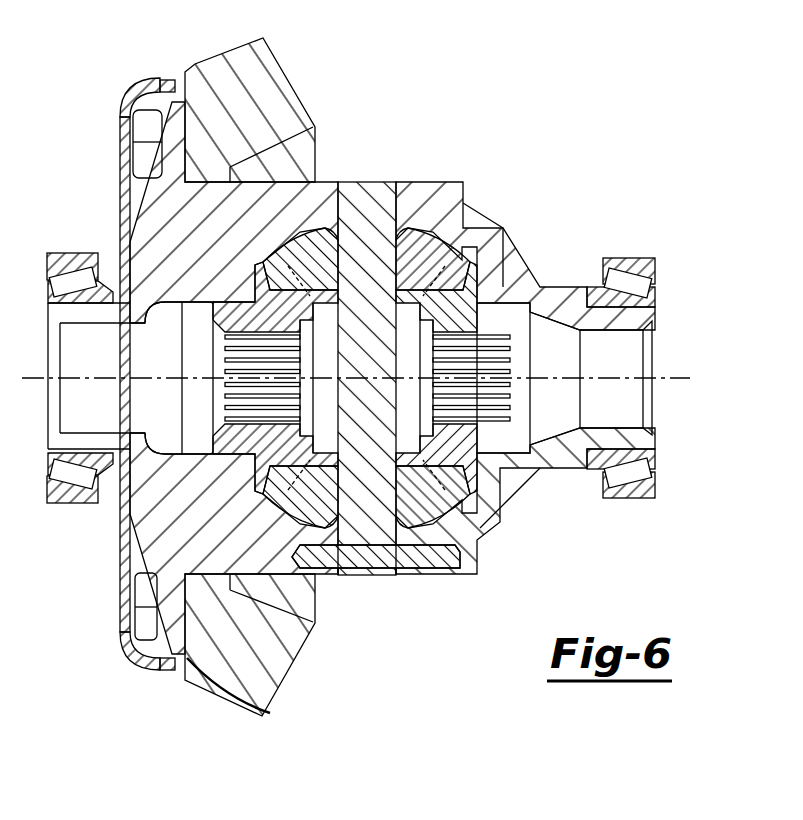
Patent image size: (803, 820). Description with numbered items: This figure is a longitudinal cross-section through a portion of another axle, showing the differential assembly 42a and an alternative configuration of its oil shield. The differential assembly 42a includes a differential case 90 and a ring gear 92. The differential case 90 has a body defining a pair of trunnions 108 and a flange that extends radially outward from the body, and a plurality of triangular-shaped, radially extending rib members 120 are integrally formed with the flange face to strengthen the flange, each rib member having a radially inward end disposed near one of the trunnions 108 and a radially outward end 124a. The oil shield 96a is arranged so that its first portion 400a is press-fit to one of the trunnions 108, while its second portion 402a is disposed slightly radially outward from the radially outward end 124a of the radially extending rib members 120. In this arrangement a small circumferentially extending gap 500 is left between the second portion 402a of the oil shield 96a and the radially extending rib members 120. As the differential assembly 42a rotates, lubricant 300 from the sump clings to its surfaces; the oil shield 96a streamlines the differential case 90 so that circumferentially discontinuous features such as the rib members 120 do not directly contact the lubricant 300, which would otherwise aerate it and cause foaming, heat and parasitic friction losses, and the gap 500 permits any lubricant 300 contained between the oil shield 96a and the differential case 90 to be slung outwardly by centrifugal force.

The differential assembly 42a is at (522, 204).
The differential case 90 is at (453, 188).
The ring gear 92 is at (270, 660).
The oil shield 96a is at (106, 150).
The trunnions 108 is at (73, 320).
The radially extending rib members 120 is at (172, 601).
The radially outward end 124a is at (168, 662).
The lubricant 300 is at (137, 560).
The first portion 400a is at (118, 548).
The second portion 402a is at (163, 672).
The circumferentially extending gap 500 is at (270, 713).